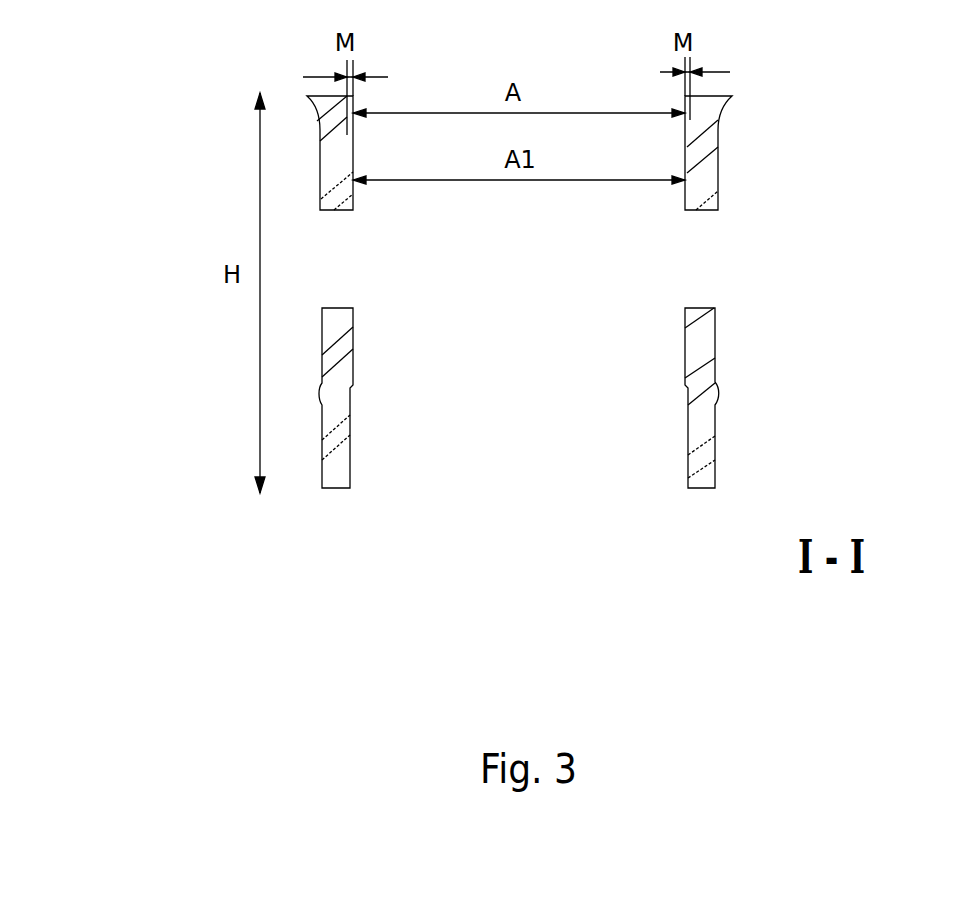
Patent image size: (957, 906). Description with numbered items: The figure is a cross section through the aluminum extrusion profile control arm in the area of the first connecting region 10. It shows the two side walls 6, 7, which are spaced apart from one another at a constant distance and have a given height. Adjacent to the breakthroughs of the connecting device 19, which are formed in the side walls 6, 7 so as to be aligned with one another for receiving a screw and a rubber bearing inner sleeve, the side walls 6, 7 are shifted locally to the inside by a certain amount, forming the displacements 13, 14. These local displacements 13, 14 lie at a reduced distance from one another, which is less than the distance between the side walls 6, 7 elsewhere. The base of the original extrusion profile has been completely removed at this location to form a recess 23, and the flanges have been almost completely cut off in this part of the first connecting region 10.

The side wall 6 is at (335, 438).
The side wall 7 is at (705, 443).
The first connecting region 10 is at (511, 364).
The displacement 13 is at (337, 174).
The displacement 14 is at (713, 186).
The connecting device 19 is at (305, 262).
The recess 23 is at (520, 470).